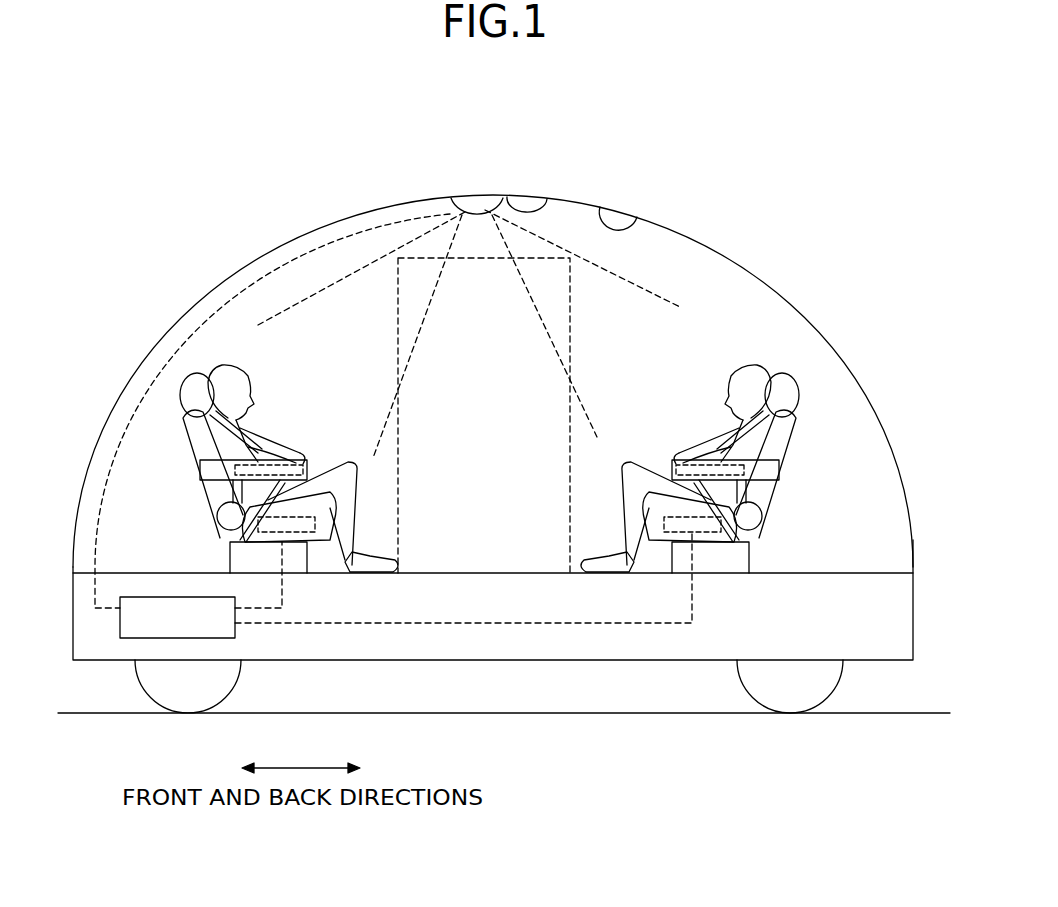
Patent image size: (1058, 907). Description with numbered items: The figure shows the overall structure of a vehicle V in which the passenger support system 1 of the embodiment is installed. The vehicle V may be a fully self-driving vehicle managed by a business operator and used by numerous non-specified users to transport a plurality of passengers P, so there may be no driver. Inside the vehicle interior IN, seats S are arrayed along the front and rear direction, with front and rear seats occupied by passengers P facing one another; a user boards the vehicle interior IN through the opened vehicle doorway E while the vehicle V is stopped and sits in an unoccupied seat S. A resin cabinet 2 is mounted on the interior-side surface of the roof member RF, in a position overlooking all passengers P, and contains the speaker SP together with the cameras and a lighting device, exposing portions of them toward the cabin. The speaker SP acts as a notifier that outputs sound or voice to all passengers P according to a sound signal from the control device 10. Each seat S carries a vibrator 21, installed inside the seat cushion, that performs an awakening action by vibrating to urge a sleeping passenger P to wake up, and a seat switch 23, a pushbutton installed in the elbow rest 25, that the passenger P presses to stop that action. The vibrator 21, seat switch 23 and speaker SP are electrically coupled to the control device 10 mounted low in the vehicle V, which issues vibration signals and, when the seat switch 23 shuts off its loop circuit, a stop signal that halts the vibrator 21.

The passenger support system 1 is at (511, 179).
The cabinet 2 is at (547, 198).
The control device 10 is at (237, 630).
The vibrator 21 is at (232, 551).
The seat switch 23 is at (298, 462).
The elbow rest 25 is at (272, 460).
The speaker SP is at (475, 203).
The roof member RF is at (630, 217).
The vehicle interior IN is at (543, 415).
The vehicle V is at (726, 238).
The passenger P is at (223, 363).
The seat S is at (183, 450).
The vehicle doorway E is at (560, 557).